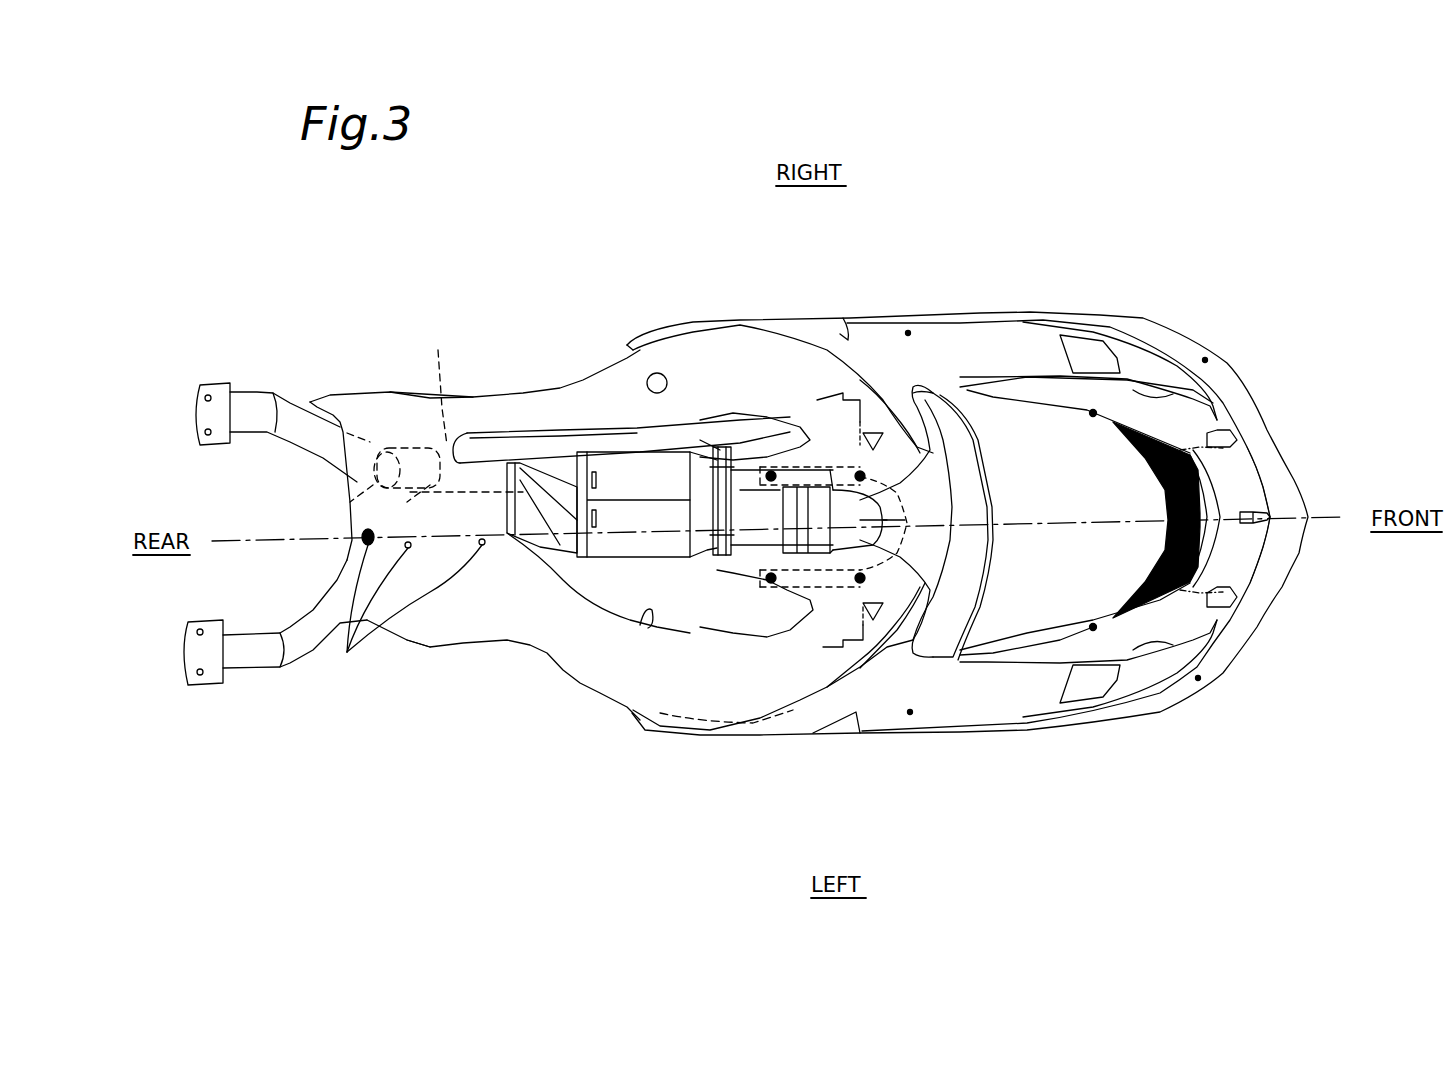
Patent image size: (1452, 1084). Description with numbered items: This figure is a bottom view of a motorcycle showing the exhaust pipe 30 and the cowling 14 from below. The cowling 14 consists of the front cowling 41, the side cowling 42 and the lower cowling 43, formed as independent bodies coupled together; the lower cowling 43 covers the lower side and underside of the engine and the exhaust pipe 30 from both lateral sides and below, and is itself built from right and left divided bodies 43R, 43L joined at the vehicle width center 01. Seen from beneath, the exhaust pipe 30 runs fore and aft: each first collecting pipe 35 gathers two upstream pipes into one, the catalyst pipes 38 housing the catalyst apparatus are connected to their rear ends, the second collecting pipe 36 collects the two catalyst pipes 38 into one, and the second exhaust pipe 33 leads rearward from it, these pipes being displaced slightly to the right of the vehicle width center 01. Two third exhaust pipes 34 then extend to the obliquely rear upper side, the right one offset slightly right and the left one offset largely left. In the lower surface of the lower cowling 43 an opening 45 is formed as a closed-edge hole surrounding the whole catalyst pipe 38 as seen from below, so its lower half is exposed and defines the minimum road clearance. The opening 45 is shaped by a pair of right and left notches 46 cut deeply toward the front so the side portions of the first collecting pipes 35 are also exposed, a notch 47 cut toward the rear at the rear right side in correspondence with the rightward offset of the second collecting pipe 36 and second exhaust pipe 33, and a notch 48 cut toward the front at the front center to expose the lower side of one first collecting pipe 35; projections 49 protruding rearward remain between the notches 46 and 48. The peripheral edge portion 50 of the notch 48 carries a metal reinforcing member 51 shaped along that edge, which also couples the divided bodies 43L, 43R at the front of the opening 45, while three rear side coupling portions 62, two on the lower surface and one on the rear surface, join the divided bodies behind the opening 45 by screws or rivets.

The vehicle width center 01 is at (1326, 517).
The cowling 14 is at (1215, 327).
The exhaust pipe 30 is at (527, 532).
The second exhaust pipe 33 is at (443, 387).
The third exhaust pipe 34 is at (268, 723).
The first collecting pipe 35 is at (742, 468).
The second collecting pipe 36 is at (552, 530).
The catalyst pipe 38 is at (627, 470).
The front cowling 41 is at (1267, 425).
The side cowling 42 is at (918, 320).
The lower cowling 43 is at (600, 365).
The right divided body 43R is at (395, 392).
The left divided body 43L is at (403, 642).
The opening 45 is at (650, 625).
The notch 46 is at (773, 457).
The notch 47 is at (482, 432).
The notch 48 is at (880, 533).
The projection 49 is at (727, 445).
The peripheral edge portion 50 is at (893, 550).
The reinforcing member 51 is at (893, 493).
The coupling portion 62 is at (404, 617).